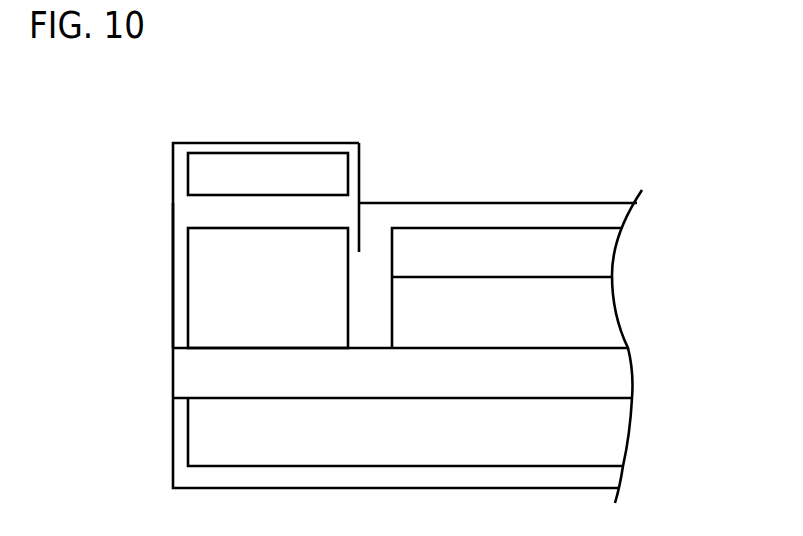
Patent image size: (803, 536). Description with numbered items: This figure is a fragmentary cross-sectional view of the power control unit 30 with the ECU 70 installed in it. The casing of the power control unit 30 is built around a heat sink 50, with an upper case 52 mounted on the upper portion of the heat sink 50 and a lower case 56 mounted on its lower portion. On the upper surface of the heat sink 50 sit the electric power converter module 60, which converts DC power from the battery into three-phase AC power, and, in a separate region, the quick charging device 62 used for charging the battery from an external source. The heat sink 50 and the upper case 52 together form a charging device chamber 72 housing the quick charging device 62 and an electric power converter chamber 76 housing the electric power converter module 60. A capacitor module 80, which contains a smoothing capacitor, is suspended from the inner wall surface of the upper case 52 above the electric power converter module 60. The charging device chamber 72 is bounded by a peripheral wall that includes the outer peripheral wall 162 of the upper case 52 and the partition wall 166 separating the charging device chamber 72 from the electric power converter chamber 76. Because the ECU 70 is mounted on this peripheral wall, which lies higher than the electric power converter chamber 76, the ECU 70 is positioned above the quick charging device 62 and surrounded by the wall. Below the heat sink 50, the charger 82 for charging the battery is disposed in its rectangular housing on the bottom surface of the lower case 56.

The power control unit 30 is at (389, 107).
The heat sink 50 is at (608, 377).
The upper case 52 is at (171, 282).
The lower case 56 is at (171, 436).
The electric power converter module 60 is at (592, 313).
The quick charging device 62 is at (315, 244).
The ECU 70 is at (276, 166).
The charging device chamber 72 is at (231, 217).
The electric power converter chamber 76 is at (464, 219).
The capacitor module 80 is at (525, 240).
The charger 82 is at (605, 445).
The outer peripheral wall 162 is at (172, 175).
The partition wall 166 is at (360, 163).